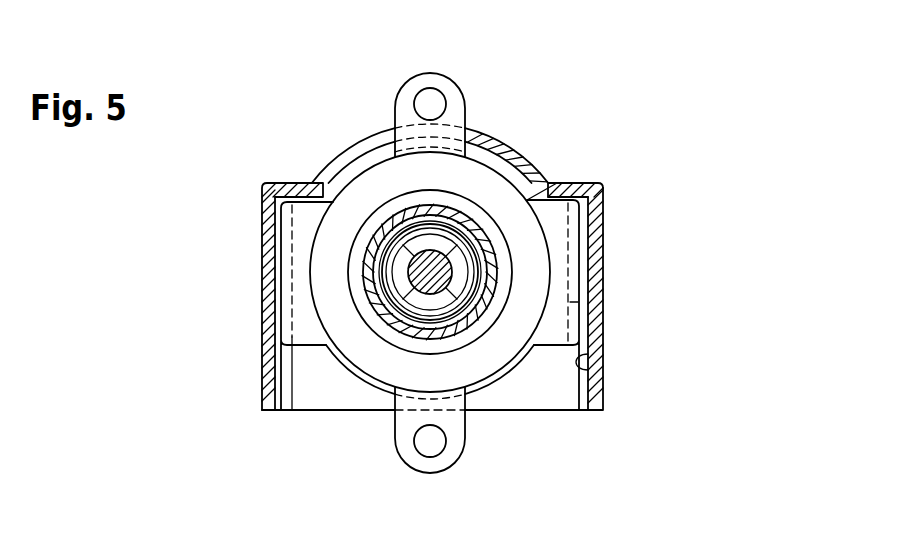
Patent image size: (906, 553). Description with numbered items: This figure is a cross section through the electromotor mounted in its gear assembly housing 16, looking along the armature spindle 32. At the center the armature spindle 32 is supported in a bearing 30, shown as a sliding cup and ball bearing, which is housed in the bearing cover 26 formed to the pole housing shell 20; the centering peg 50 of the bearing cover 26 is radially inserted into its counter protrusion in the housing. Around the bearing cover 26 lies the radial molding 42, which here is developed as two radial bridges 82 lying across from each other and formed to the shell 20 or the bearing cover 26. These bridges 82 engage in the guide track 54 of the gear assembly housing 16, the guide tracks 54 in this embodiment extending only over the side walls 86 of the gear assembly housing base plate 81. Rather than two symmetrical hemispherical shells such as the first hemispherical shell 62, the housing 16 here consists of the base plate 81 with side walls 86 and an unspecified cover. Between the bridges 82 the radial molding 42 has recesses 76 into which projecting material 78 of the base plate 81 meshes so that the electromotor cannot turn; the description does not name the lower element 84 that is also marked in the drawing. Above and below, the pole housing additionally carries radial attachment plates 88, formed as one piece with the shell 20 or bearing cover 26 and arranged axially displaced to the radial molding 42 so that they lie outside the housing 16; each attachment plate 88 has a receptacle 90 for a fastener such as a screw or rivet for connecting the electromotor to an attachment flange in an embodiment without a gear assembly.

The gear assembly housing 16 is at (632, 305).
The pole housing shell 20 is at (362, 165).
The bearing cover 26 is at (520, 235).
The bearing 30 is at (468, 250).
The armature spindle 32 is at (420, 262).
The radial molding 42 is at (238, 306).
The centering peg 50 is at (460, 225).
The guide track 54 is at (600, 365).
The first hemispherical shell 62 is at (592, 270).
The recess 76 is at (308, 197).
The projecting material 78 is at (282, 183).
The gear assembly housing base plate 81 is at (632, 305).
The radial bridge 82 is at (300, 308).
The bottom ring 84 is at (525, 353).
The side wall 86 is at (265, 252).
The attachment plate 88 is at (462, 103).
The receptacle 90 is at (437, 101).